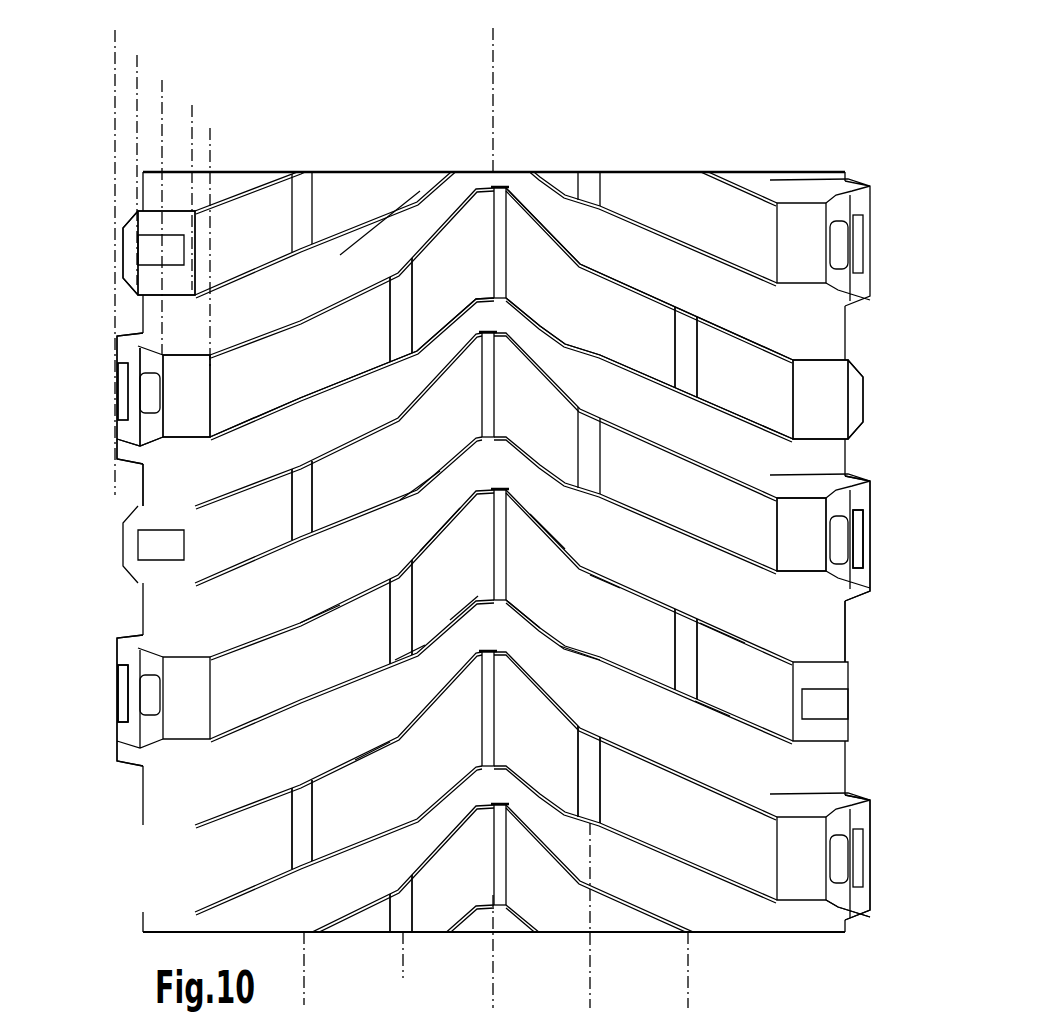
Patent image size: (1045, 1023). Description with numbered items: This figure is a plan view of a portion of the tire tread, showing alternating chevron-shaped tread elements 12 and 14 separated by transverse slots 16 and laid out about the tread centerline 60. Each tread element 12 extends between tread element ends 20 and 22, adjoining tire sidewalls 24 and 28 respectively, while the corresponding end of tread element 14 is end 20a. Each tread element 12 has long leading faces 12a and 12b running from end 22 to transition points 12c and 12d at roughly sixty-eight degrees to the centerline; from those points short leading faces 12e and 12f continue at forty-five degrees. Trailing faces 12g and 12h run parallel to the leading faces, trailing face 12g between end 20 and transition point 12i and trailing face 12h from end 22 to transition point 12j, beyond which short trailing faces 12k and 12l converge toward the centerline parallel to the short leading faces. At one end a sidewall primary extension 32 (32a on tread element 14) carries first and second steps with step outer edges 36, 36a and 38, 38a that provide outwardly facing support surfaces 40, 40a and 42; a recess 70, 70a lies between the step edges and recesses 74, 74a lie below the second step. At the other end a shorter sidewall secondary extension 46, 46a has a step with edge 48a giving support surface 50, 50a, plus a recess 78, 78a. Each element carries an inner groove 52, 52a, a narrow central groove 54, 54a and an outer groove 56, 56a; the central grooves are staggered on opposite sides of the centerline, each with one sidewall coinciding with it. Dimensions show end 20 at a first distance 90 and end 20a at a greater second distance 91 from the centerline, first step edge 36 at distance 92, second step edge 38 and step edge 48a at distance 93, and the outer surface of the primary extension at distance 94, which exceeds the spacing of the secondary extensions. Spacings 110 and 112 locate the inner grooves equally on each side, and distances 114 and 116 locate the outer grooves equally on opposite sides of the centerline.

The tread element 12 is at (597, 312).
The long leading face 12a is at (320, 603).
The long leading face 12b is at (722, 616).
The transition point 12c is at (420, 515).
The transition point 12d is at (605, 577).
The short leading face 12e is at (422, 502).
The short leading face 12f is at (547, 518).
The trailing face 12g is at (372, 722).
The trailing face 12h is at (712, 725).
The transition point 12i is at (410, 660).
The transition point 12j is at (580, 655).
The short trailing face 12k is at (462, 620).
The short trailing face 12l is at (517, 612).
The tread element 14 is at (350, 190).
The transverse slot 16 is at (347, 408).
The tread element end 20 is at (213, 392).
The tread element end 20a is at (185, 238).
The tread element end 22 is at (793, 400).
The tire sidewall 24 is at (141, 500).
The tire sidewall 28 is at (860, 620).
The sidewall primary extension 32 is at (125, 390).
The sidewall primary extension 32a is at (868, 502).
The first step outer edge 36 is at (167, 408).
The first step outer edge 36a is at (760, 800).
The second step outer edge 38 is at (160, 360).
The second step outer edge 38a is at (862, 836).
The first support surface 40 is at (188, 372).
The first support surface 40a is at (803, 520).
The second support surface 42 is at (150, 432).
The sidewall secondary extension 46 is at (866, 404).
The sidewall secondary extension 46a is at (126, 568).
The step outer edge 48a is at (137, 272).
The support surface 50 is at (853, 375).
The support surface 50a is at (137, 232).
The inner groove 52 is at (400, 300).
The inner groove 52a is at (600, 795).
The central groove 54 is at (500, 247).
The central groove 54a is at (483, 385).
The outer groove 56 is at (687, 345).
The outer groove 56a is at (303, 488).
The tread centerline 60 is at (493, 100).
The recess 70 is at (140, 668).
The recess 70a is at (868, 580).
The recess 74 is at (125, 692).
The recess 74a is at (862, 538).
The recess 78 is at (863, 713).
The recess 78a is at (163, 250).
The first distance 90 is at (493, 140).
The second distance 91 is at (493, 117).
The distance 92 is at (162, 92).
The distance 93 is at (137, 68).
The distance 94 is at (115, 44).
The spacing 110 is at (403, 964).
The spacing 112 is at (493, 964).
The distance 114 is at (688, 993).
The distance 116 is at (493, 993).